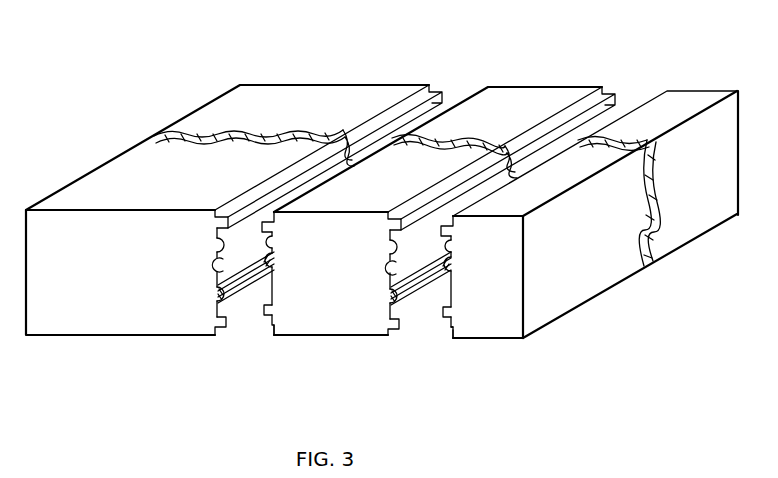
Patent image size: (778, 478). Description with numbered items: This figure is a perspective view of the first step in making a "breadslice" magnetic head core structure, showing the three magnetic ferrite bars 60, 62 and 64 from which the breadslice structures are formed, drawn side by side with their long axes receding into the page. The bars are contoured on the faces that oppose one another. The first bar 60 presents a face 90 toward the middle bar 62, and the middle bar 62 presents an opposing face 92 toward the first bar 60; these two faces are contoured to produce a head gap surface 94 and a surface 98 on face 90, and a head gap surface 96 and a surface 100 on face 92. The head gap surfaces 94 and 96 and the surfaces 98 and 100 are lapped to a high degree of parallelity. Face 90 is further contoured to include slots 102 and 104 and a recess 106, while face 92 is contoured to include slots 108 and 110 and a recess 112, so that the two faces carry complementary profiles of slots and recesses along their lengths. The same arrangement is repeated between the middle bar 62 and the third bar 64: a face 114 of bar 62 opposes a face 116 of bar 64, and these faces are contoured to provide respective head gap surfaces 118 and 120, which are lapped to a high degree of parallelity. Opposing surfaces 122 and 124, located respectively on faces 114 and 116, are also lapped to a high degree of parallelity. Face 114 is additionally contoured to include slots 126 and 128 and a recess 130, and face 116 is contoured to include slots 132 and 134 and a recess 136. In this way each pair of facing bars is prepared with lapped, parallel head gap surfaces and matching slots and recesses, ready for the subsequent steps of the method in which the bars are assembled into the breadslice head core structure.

The magnetic ferrite bar 60 is at (323, 87).
The magnetic ferrite bar 62 is at (544, 87).
The magnetic ferrite bar 64 is at (700, 88).
The face 90 is at (210, 338).
The face 92 is at (264, 338).
The head gap surface 94 is at (212, 289).
The head gap surface 96 is at (258, 322).
The surface 98 is at (212, 248).
The surface 100 is at (280, 240).
The slot 102 is at (227, 208).
The slot 104 is at (214, 328).
The recess 106 is at (214, 264).
The slot 108 is at (290, 222).
The slot 110 is at (270, 324).
The recess 112 is at (280, 262).
The face 114 is at (383, 340).
The face 116 is at (435, 338).
The head gap surface 118 is at (406, 321).
The head gap surface 120 is at (442, 315).
The surface 122 is at (388, 246).
The surface 124 is at (453, 245).
The slot 126 is at (405, 212).
The slot 128 is at (387, 330).
The recess 130 is at (400, 264).
The slot 132 is at (458, 226).
The slot 134 is at (450, 333).
The recess 136 is at (452, 272).